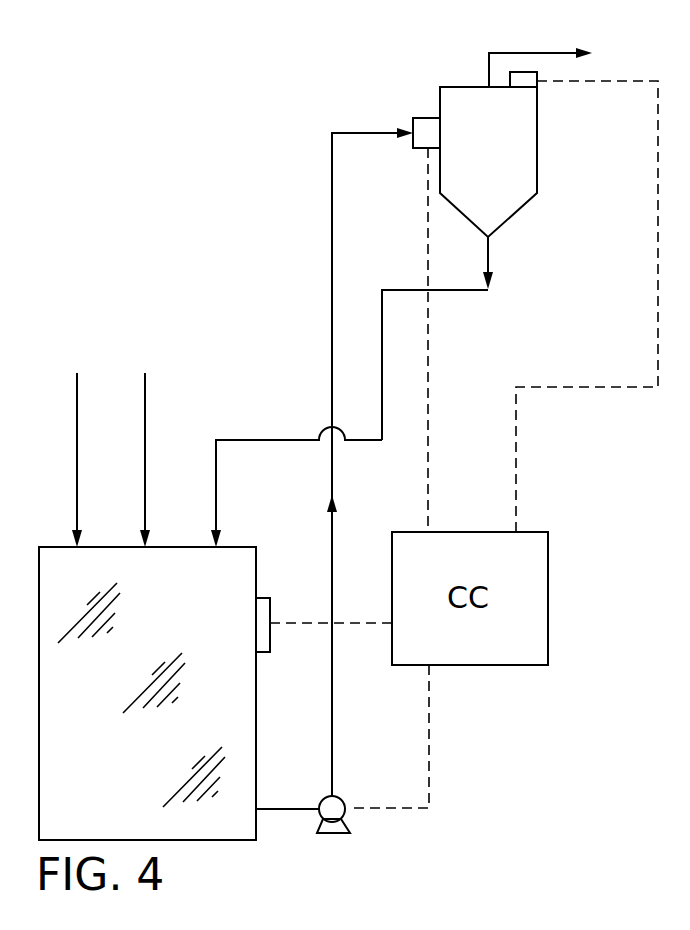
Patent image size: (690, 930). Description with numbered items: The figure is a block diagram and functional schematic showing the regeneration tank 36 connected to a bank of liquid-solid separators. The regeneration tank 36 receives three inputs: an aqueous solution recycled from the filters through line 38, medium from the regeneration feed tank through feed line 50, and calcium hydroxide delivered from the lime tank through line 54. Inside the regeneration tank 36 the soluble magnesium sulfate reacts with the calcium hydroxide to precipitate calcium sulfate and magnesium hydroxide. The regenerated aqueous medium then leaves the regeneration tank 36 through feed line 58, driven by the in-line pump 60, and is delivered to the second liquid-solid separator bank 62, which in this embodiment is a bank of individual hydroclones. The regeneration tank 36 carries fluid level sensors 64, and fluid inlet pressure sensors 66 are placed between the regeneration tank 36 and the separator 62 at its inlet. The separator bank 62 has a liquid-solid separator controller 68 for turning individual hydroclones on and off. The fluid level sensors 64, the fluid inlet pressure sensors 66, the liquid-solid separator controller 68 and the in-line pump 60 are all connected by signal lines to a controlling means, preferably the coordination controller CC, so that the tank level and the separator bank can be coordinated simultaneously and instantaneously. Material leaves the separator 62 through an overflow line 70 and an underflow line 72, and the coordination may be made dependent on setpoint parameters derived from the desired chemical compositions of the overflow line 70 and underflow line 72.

The regeneration tank 36 is at (58, 525).
The line 38 is at (77, 430).
The feed line 50 is at (145, 402).
The line 54 is at (280, 440).
The feed line 58 is at (330, 278).
The in-line pump 60 is at (345, 797).
The second liquid-solid separator bank 62 is at (560, 134).
The fluid level sensors 64 is at (270, 598).
The fluid inlet pressure sensors 66 is at (420, 118).
The liquid-solid separator controller 68 is at (537, 73).
The overflow line 70 is at (532, 52).
The underflow line 72 is at (468, 291).